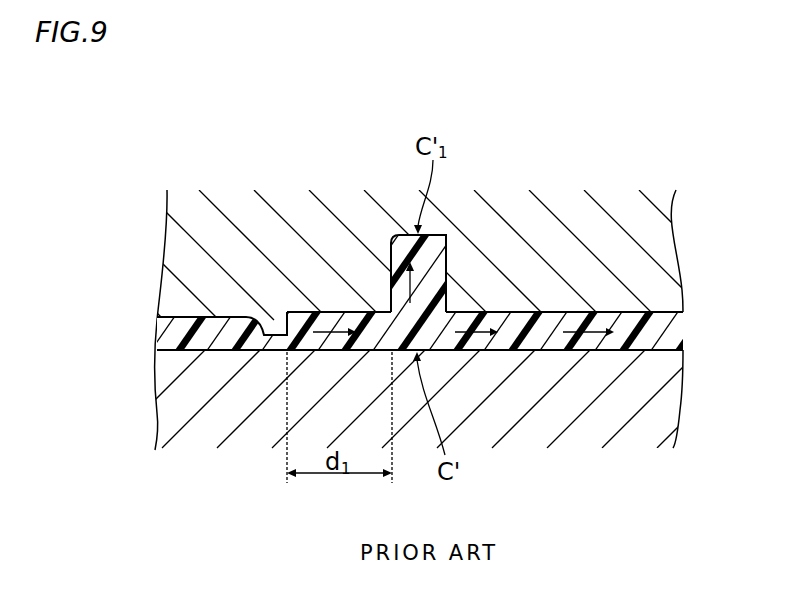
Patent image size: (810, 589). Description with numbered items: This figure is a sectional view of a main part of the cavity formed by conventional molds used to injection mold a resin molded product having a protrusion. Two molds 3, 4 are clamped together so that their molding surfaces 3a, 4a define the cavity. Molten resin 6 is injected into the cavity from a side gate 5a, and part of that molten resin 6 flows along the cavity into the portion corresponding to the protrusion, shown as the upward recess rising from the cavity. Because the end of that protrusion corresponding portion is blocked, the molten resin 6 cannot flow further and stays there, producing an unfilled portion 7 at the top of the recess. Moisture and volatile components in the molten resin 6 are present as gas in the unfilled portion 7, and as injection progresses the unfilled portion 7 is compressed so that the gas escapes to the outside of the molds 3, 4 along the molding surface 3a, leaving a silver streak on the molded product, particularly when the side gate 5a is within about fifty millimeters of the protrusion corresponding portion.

The mold 3 is at (232, 248).
The mold 4 is at (195, 408).
The molten resin 6 is at (666, 333).
The unfilled portion 7 is at (445, 237).
The molding surface 3a is at (626, 309).
The molding surface 4a is at (560, 352).
The side gate 5a is at (270, 352).